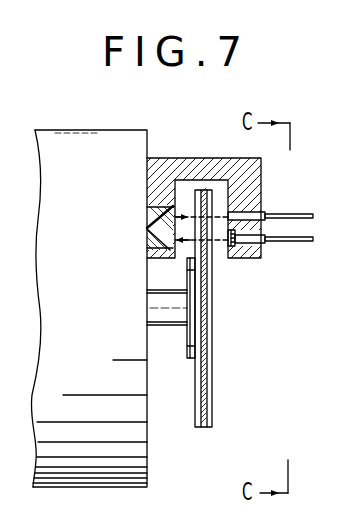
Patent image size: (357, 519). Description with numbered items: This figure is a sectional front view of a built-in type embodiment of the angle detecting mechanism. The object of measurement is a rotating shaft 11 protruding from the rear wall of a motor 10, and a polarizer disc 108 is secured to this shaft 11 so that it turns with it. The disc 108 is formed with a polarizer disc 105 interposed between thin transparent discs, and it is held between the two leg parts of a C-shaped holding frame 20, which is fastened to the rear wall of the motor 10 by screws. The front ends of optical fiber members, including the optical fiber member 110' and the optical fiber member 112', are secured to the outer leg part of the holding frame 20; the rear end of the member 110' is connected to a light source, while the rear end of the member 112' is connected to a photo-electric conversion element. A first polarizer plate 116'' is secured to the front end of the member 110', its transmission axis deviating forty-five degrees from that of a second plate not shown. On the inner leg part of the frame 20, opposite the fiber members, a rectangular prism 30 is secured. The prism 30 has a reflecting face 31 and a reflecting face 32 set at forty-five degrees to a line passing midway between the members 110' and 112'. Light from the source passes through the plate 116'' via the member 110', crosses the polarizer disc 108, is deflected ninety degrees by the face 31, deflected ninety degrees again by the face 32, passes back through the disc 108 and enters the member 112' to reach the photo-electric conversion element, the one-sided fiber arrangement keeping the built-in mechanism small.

The motor 10 is at (118, 128).
The rotating shaft 11 is at (163, 327).
The C-shaped holding frame 20 is at (185, 158).
The rectangular prism 30 is at (144, 228).
The reflecting face 31 is at (150, 248).
The reflecting face 32 is at (158, 207).
The polarizer disc 105 is at (206, 392).
The polarizer disc 108 is at (216, 362).
The optical fiber member 110' is at (274, 270).
The optical fiber member 112' is at (270, 197).
The first polarizer plate 116'' is at (240, 271).